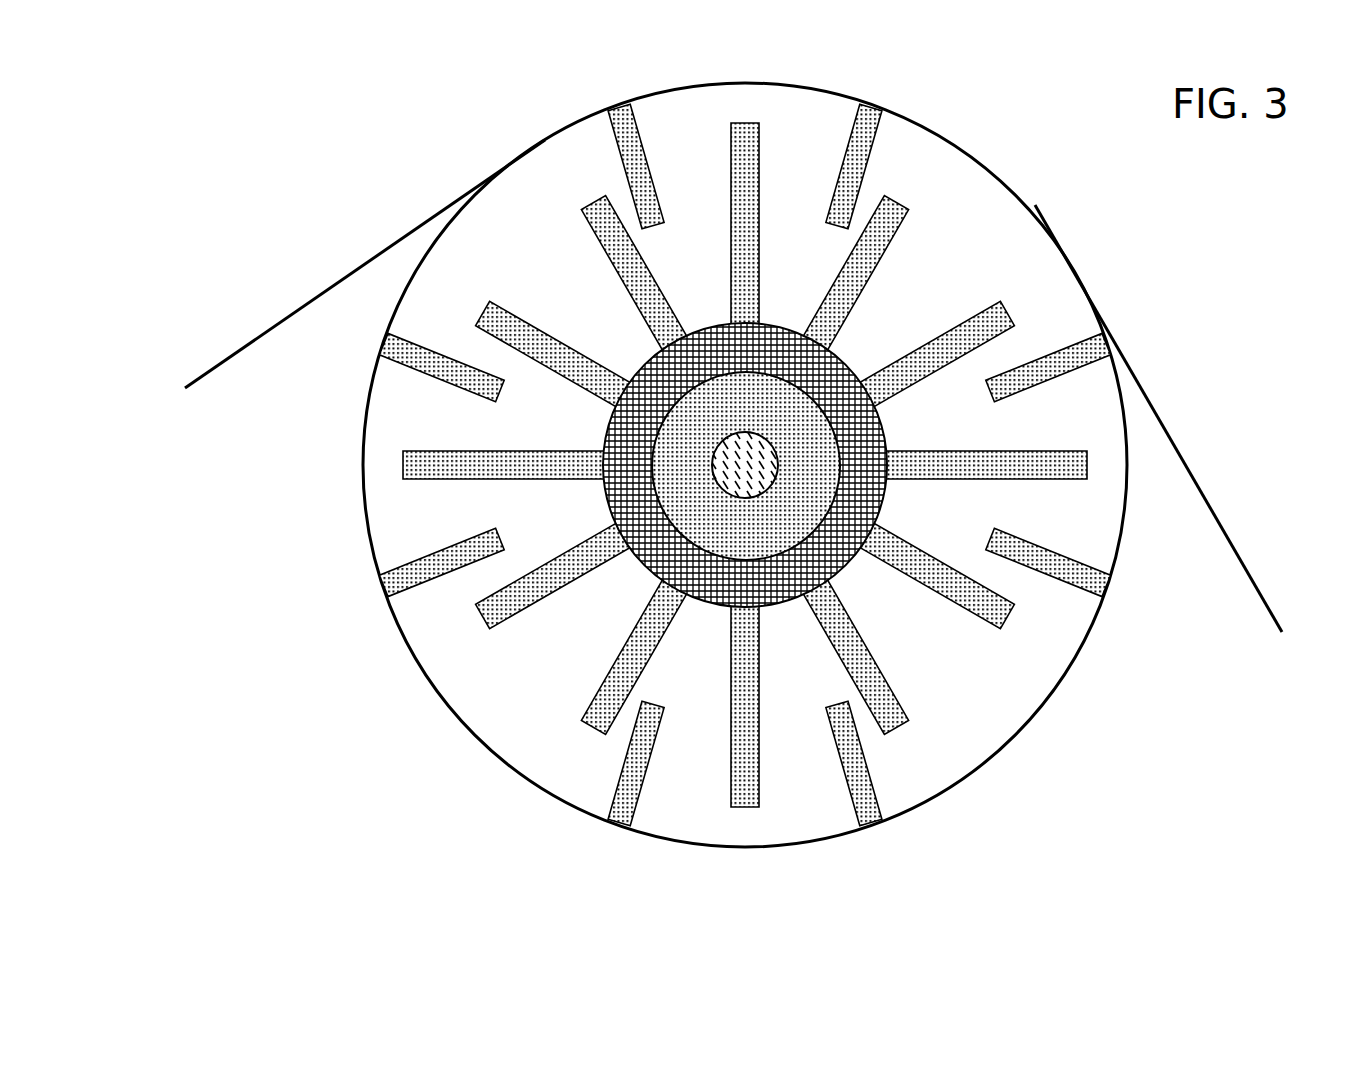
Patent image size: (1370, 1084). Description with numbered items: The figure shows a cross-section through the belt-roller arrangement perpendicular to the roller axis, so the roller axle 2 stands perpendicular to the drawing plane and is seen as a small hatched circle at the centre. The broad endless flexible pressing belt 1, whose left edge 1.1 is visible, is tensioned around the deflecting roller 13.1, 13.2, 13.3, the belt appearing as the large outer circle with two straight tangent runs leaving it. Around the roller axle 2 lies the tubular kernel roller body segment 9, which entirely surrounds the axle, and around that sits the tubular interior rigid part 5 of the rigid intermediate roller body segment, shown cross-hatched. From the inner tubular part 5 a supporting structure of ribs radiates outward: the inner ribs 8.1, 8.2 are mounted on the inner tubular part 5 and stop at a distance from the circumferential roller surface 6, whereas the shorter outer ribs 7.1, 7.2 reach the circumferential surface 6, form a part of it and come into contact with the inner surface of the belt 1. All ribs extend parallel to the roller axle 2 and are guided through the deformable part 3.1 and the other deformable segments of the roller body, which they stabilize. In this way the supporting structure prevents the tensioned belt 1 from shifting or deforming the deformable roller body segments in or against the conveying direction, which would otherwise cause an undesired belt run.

The pressing belt 1 is at (737, 442).
The left edge of the pressing belt 1.1 is at (293, 313).
The roller axle 2 is at (745, 463).
The deformable part 3.1 is at (957, 697).
The tubular interior rigid part 5 is at (835, 382).
The circumferential roller surface 6 is at (1040, 214).
The outer rib 7.1 is at (627, 130).
The outer rib 7.2 is at (867, 138).
The inner rib 8.1 is at (638, 277).
The inner rib 8.2 is at (748, 213).
The tubular kernel roller body segment 9 is at (745, 398).
The deflecting roller 13.1 is at (233, 577).
The deflecting roller 13.2 is at (233, 577).
The deflecting roller 13.3 is at (320, 460).